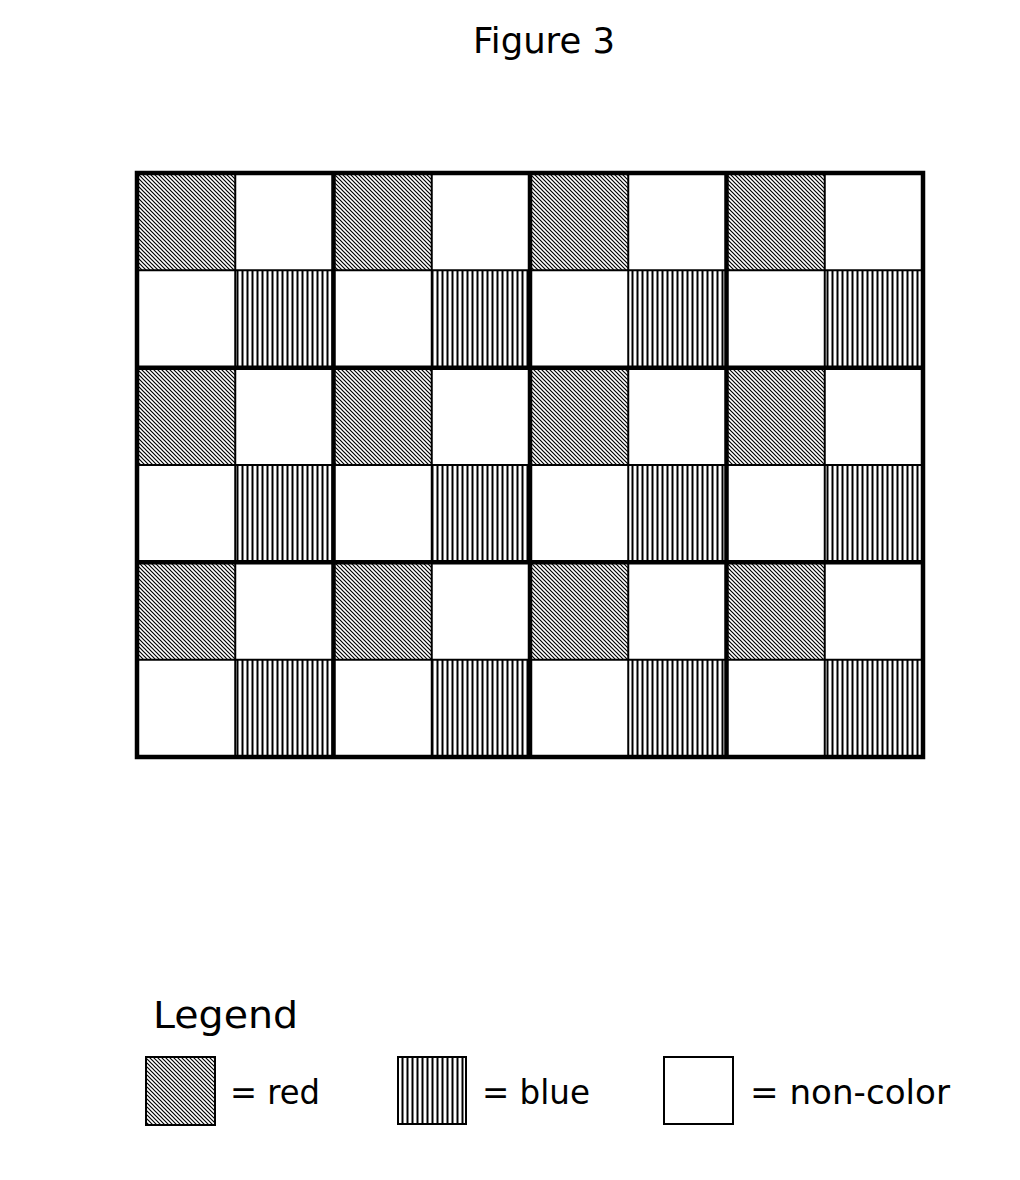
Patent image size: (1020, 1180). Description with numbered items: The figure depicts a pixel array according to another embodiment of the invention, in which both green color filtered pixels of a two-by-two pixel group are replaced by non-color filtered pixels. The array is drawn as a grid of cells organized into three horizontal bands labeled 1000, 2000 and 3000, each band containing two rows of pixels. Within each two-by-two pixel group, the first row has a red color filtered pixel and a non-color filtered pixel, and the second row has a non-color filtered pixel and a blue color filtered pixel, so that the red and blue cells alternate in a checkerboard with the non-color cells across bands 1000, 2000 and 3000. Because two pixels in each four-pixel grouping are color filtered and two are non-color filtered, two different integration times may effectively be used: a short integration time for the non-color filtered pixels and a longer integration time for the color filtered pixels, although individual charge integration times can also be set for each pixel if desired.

The first pixel row group 1000 is at (108, 175).
The second pixel row group 2000 is at (108, 372).
The third pixel row group 3000 is at (108, 567).